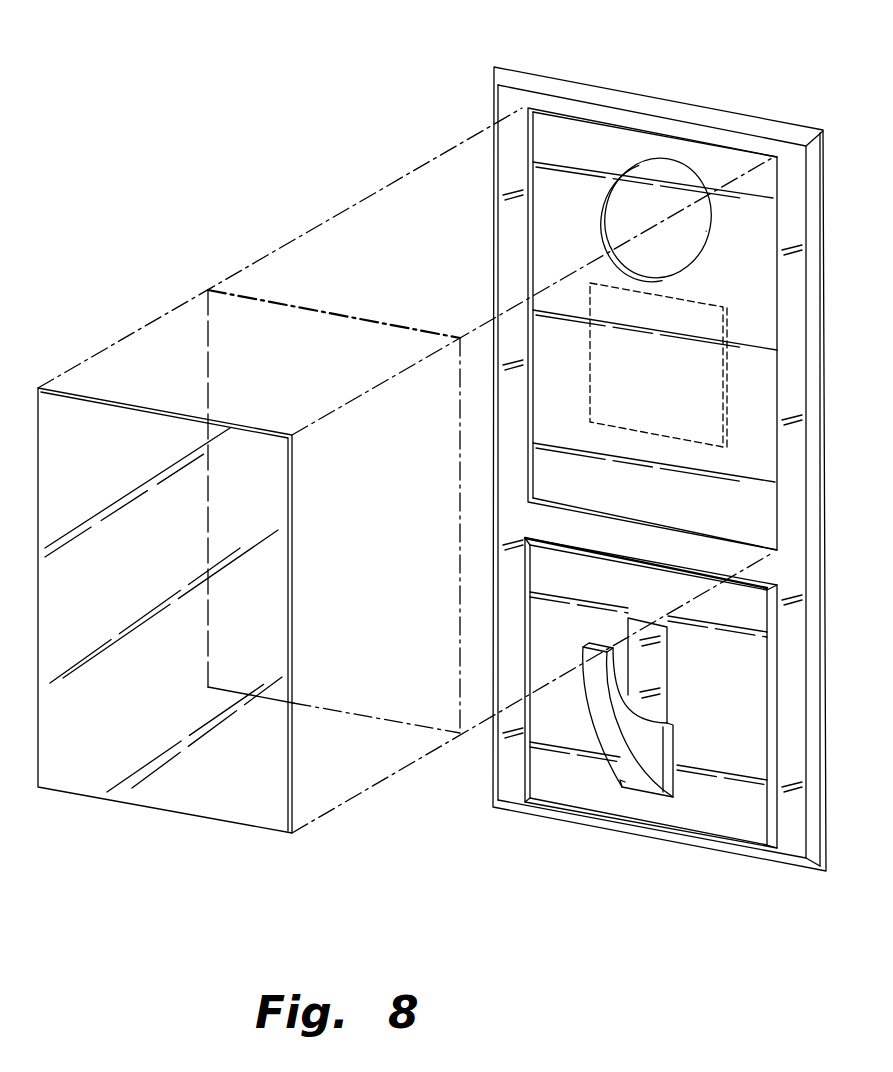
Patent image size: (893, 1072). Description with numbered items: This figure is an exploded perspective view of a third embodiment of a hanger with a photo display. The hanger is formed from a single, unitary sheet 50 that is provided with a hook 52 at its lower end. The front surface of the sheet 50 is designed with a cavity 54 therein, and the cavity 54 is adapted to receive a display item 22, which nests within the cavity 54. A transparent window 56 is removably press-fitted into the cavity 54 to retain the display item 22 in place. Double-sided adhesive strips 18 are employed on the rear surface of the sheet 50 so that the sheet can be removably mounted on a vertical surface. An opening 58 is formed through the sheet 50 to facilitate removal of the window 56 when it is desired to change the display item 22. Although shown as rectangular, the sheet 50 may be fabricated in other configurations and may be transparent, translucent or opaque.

The double-sided adhesive strips 18 is at (590, 352).
The display item 22 is at (330, 313).
The sheet 50 is at (659, 449).
The hook 52 is at (603, 727).
The cavity 54 is at (700, 516).
The transparent window 56 is at (253, 796).
The opening 58 is at (617, 220).